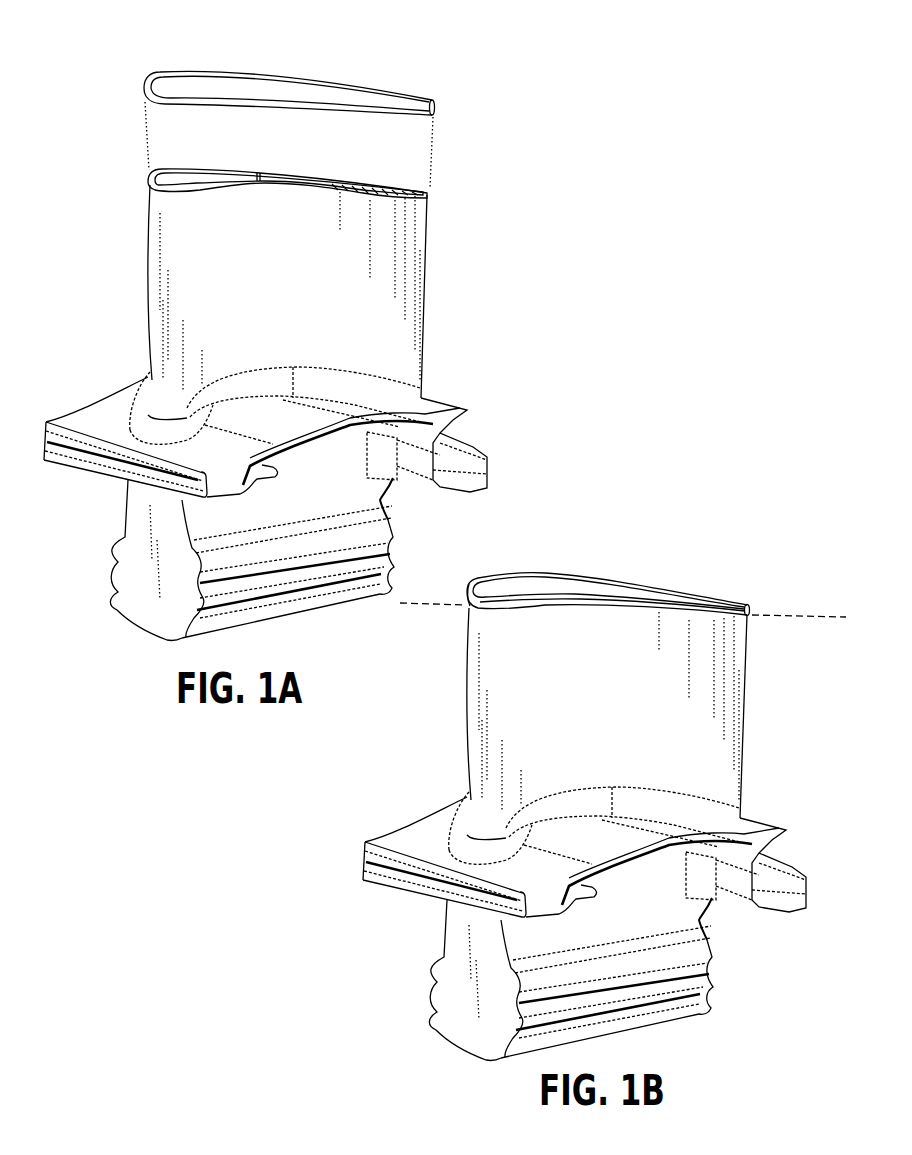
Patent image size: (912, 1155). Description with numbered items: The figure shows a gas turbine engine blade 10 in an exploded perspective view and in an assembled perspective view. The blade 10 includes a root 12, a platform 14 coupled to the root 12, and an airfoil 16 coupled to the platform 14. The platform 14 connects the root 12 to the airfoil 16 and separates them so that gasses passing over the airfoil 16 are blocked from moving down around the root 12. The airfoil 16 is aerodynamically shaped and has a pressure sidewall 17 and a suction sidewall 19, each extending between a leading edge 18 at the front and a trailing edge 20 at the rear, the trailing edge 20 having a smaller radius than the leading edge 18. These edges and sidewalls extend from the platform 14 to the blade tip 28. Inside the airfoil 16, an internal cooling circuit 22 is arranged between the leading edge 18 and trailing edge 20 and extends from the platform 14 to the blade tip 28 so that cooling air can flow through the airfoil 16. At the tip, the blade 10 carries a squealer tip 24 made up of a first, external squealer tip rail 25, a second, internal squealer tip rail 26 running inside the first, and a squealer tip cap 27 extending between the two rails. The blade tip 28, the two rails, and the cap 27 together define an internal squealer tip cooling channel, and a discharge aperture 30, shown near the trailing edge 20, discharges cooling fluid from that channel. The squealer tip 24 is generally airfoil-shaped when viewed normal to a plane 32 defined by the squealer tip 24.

In FIG. 1A, the gas turbine engine blade 10 is at (110, 72).
In FIG. 1B, the gas turbine engine blade 10 is at (700, 553).
In FIG. 1A, the root 12 is at (112, 542).
In FIG. 1B, the root 12 is at (534, 980).
In FIG. 1A, the platform 14 is at (76, 407).
In FIG. 1B, the platform 14 is at (584, 850).
In FIG. 1A, the airfoil 16 is at (148, 271).
In FIG. 1B, the airfoil 16 is at (433, 704).
In FIG. 1A, the pressure sidewall 17 is at (388, 244).
In FIG. 1A, the leading edge 18 is at (147, 184).
In FIG. 1A, the suction sidewall 19 is at (257, 172).
In FIG. 1A, the trailing edge 20 is at (432, 189).
In FIG. 1A, the internal cooling circuit 22 is at (191, 184).
In FIG. 1A, the squealer tip 24 is at (372, 91).
In FIG. 1B, the squealer tip 24 is at (596, 576).
In FIG. 1B, the first squealer tip rail 25 is at (535, 567).
In FIG. 1B, the second squealer tip rail 26 is at (653, 595).
In FIG. 1B, the squealer tip cap 27 is at (470, 586).
In FIG. 1A, the blade tip 28 is at (345, 186).
In FIG. 1B, the discharge aperture 30 is at (760, 609).
In FIG. 1B, the plane 32 is at (639, 616).